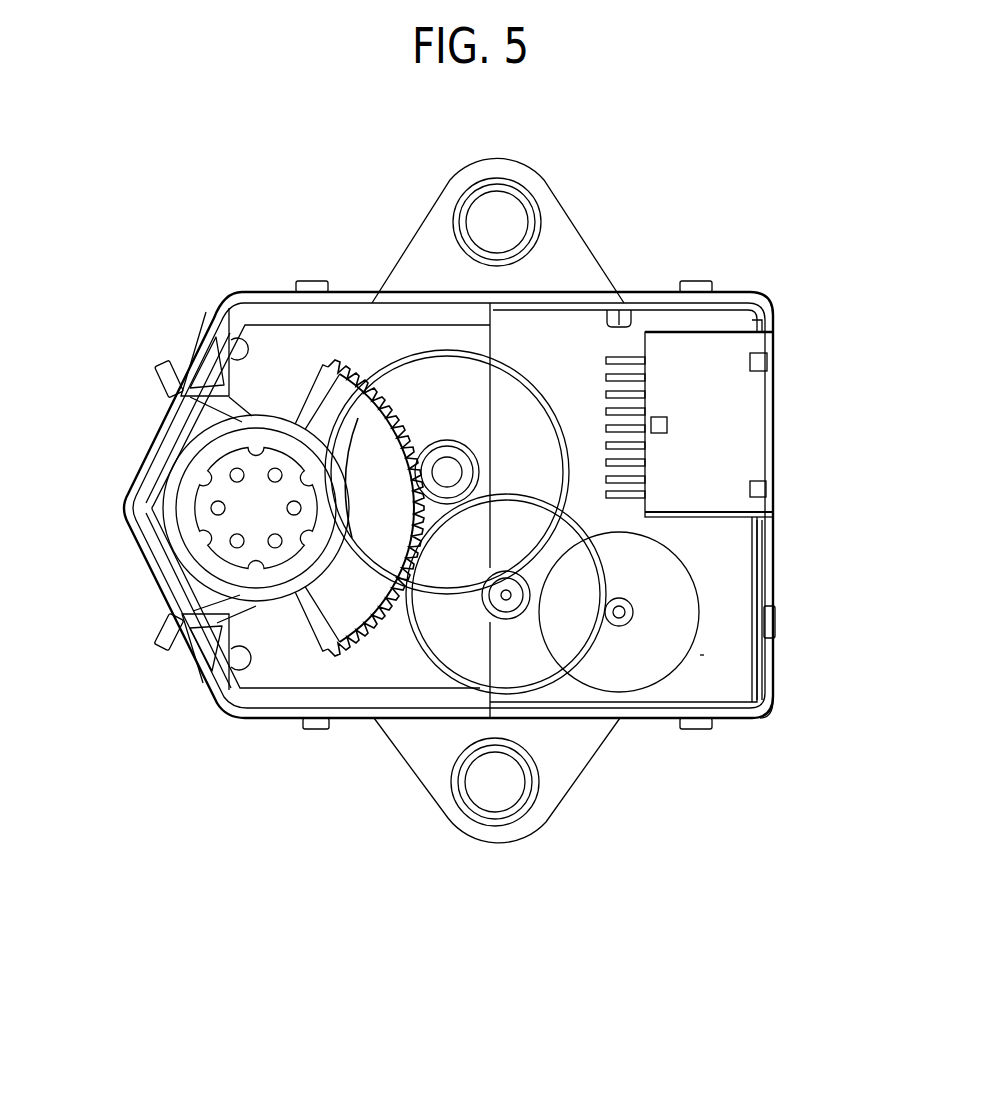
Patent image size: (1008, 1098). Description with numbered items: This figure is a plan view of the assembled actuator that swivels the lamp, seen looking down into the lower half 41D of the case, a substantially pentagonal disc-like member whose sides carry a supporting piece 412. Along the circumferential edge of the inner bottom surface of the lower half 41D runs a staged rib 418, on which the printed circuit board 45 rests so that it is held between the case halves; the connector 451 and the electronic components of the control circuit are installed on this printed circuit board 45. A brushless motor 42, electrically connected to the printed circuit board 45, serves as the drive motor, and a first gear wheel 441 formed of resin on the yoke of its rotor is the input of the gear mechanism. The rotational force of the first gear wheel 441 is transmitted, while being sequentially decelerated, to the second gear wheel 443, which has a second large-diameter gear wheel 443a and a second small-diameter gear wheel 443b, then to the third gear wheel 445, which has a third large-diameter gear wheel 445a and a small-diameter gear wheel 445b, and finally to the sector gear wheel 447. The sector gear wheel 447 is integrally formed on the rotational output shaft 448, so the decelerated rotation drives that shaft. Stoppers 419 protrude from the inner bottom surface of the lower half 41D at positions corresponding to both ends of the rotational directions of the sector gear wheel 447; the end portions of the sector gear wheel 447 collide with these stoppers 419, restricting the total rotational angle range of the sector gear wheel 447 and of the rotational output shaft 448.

The staged rib 418 is at (390, 315).
The supporting piece 412 is at (540, 812).
The stoppers 419 is at (254, 355).
The connector 451 is at (750, 413).
The rotational output shaft 448 is at (243, 500).
The sector gear wheel 447 is at (330, 603).
The third gear wheel 445 is at (700, 115).
The third large-diameter gear wheel 445a is at (518, 390).
The small-diameter gear wheel 445b is at (452, 440).
The second gear wheel 443 is at (325, 805).
The second large-diameter gear wheel 443a is at (490, 600).
The second small-diameter gear wheel 443b is at (483, 598).
The first gear wheel 441 is at (625, 622).
The printed circuit board 45 is at (733, 608).
The brushless motor 42 is at (712, 655).
The lower half 41D is at (771, 723).